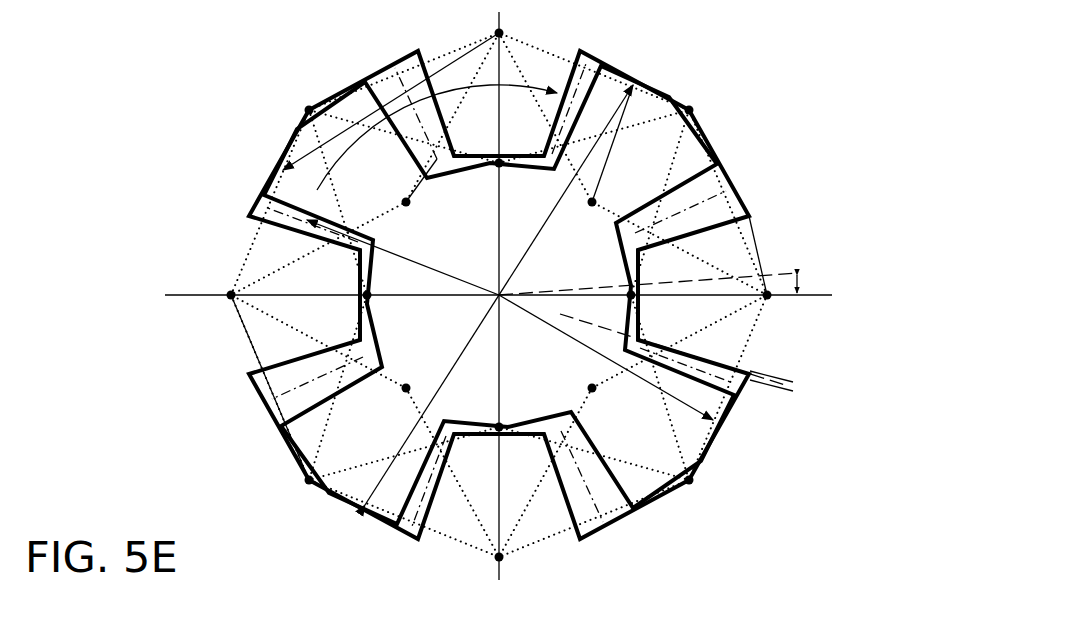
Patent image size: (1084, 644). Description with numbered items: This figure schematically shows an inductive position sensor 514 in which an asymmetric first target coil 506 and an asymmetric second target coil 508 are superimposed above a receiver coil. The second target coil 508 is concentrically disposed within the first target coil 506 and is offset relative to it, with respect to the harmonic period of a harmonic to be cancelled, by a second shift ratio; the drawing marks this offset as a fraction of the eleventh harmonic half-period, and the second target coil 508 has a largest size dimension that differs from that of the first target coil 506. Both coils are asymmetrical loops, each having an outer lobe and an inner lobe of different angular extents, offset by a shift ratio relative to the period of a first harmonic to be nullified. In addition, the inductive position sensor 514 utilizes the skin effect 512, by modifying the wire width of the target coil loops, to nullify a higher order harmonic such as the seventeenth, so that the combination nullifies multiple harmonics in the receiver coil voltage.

The first target coil 506 is at (250, 213).
The second target coil 508 is at (295, 210).
The skin effect 512 is at (780, 382).
The inductive position sensor 514 is at (818, 130).